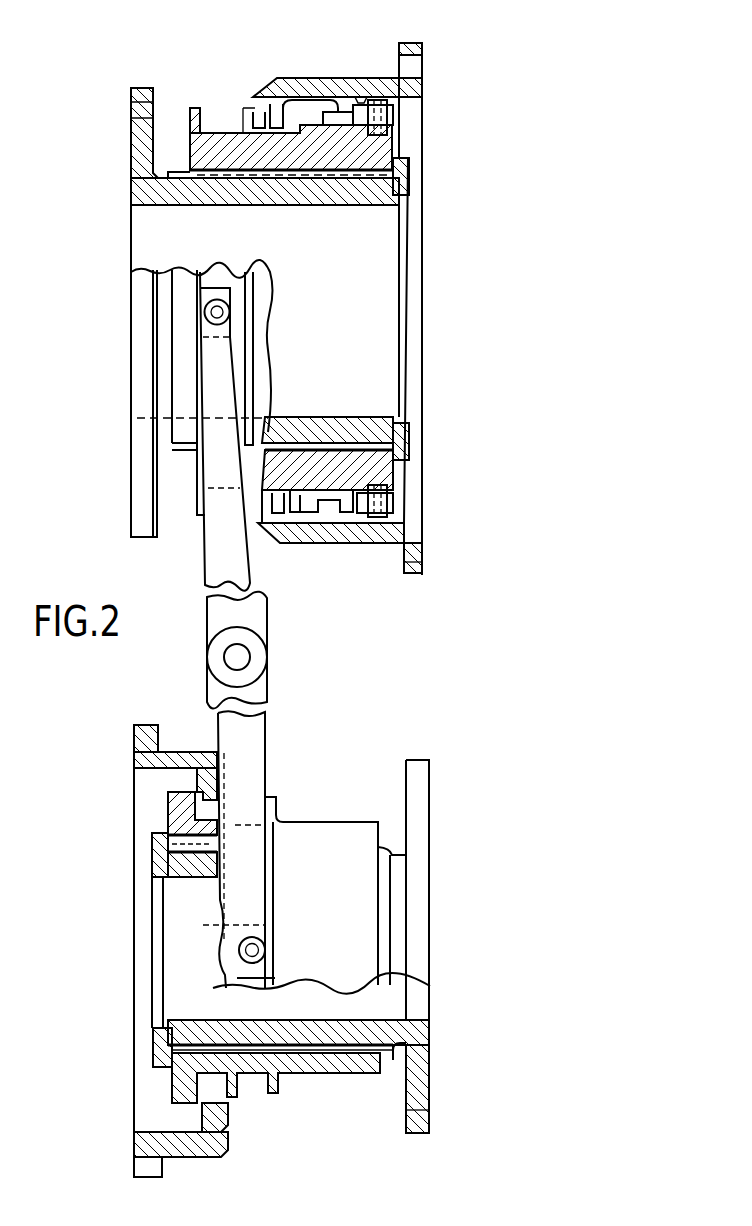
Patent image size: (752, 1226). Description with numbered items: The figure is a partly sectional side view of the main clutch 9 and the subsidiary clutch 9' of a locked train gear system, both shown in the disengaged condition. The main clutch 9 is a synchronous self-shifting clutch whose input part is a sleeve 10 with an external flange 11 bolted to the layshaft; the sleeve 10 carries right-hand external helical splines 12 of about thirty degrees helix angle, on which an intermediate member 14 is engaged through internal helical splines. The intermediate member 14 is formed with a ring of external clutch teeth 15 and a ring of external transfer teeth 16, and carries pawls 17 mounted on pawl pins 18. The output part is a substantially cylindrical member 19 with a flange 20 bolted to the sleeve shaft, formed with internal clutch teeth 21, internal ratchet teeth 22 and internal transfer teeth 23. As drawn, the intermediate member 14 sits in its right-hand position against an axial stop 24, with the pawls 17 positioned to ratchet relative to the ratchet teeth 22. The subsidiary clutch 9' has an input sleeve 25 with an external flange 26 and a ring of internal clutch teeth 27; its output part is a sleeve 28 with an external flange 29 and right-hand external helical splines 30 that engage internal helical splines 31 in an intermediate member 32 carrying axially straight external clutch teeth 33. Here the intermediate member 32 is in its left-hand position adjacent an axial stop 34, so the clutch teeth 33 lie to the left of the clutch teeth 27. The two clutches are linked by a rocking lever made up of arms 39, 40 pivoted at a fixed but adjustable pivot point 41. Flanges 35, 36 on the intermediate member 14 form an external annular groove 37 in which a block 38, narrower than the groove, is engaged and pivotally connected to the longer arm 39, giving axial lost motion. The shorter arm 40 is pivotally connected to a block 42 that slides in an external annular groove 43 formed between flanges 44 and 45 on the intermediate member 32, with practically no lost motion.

The main clutch 9 is at (342, 22).
The subsidiary clutch 9' is at (326, 1147).
The sleeve 10 is at (167, 207).
The external flange 11 is at (131, 156).
The external helical splines 12 is at (177, 170).
The intermediate member 14 is at (324, 172).
The external clutch teeth 15 is at (337, 110).
The external transfer teeth 16 is at (276, 108).
The pawls 17 is at (386, 130).
The pawl pins 18 is at (392, 117).
The cylindrical member 19 is at (358, 545).
The flange 20 is at (422, 553).
The internal clutch teeth 21 is at (296, 108).
The internal ratchet teeth 22 is at (362, 96).
The internal transfer teeth 23 is at (257, 110).
The axial stop 24 is at (410, 176).
The sleeve 25 is at (180, 753).
The external flange 26 is at (134, 742).
The internal clutch teeth 27 is at (205, 790).
The sleeve 28 is at (352, 1020).
The external flange 29 is at (420, 802).
The external helical splines 30 is at (403, 1062).
The internal helical splines 31 is at (388, 1062).
The intermediate member 32 is at (333, 830).
The external clutch teeth 33 is at (168, 797).
The axial stop 34 is at (160, 835).
The flange 35 is at (197, 347).
The flange 36 is at (247, 388).
The external annular groove 37 is at (205, 118).
The block 38 is at (200, 297).
The arm of rocking lever 39 is at (217, 563).
The arm of rocking lever 40 is at (256, 748).
The pivot point 41 is at (248, 657).
The block 42 is at (262, 933).
The external annular groove 43 is at (297, 1066).
The flange 44 is at (227, 932).
The flange 45 is at (273, 970).